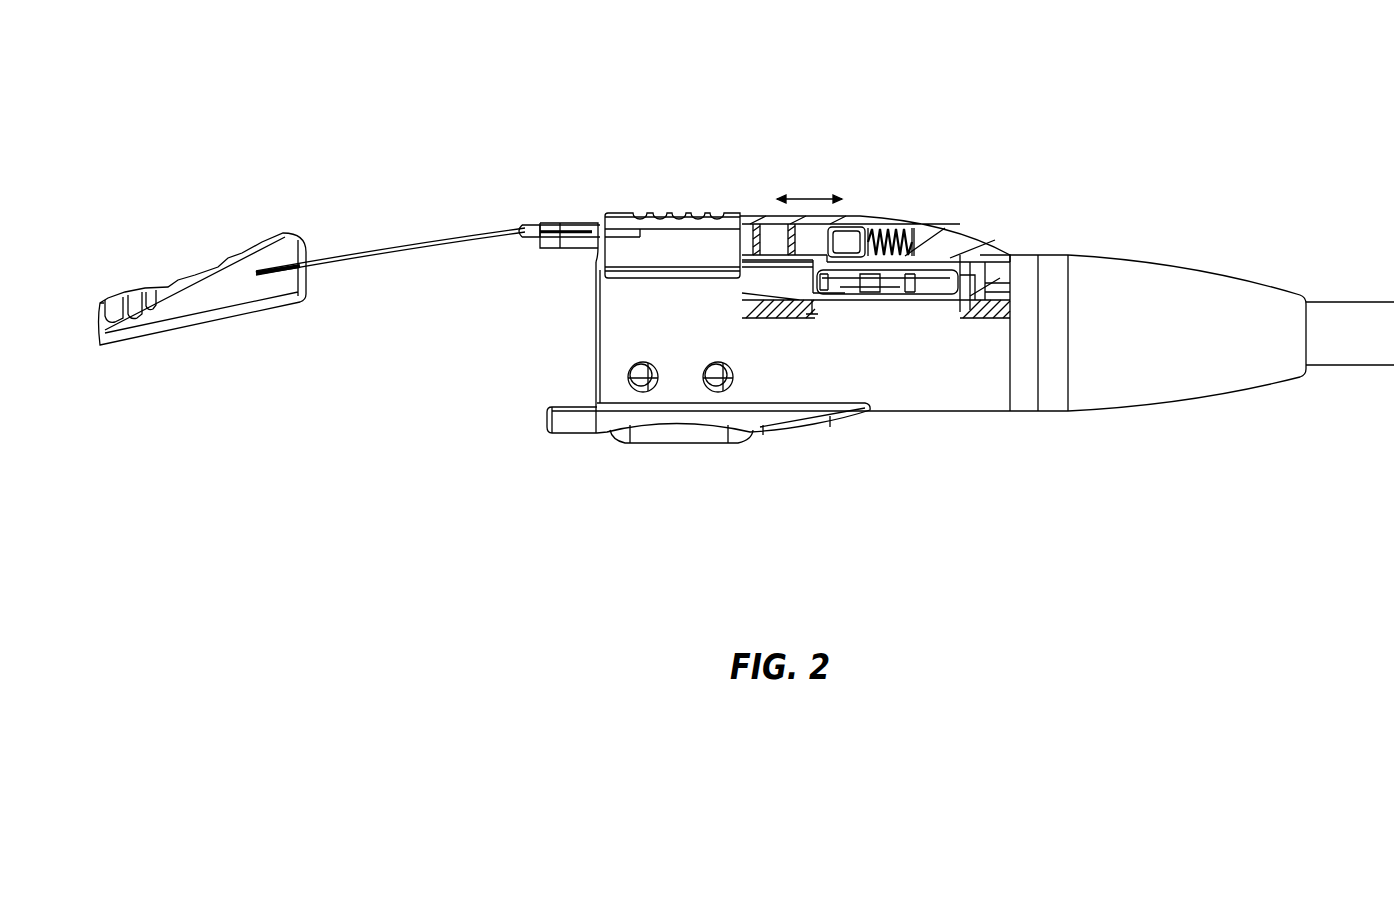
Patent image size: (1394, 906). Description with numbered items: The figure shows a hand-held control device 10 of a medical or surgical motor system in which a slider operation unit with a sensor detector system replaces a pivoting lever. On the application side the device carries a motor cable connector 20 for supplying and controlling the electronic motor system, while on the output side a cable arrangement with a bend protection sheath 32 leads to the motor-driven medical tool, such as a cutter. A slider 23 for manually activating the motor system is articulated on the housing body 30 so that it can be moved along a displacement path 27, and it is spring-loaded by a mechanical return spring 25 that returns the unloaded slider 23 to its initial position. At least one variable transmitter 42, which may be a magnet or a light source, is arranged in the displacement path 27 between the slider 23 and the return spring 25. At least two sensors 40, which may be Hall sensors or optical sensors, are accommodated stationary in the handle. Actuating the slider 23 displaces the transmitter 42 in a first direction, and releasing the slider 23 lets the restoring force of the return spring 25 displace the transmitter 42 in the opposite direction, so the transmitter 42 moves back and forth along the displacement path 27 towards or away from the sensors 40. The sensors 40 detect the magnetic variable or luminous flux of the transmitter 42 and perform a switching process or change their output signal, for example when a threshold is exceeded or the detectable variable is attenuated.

The hand-held control device 10 is at (1035, 179).
The motor cable connector 20 is at (773, 213).
The slider 23 is at (577, 222).
The return spring 25 is at (903, 222).
The displacement path 27 is at (810, 197).
The housing body 30 is at (902, 413).
The bend protection sheath 32 is at (1210, 270).
The sensors 40 is at (898, 262).
The transmitter 42 is at (857, 222).